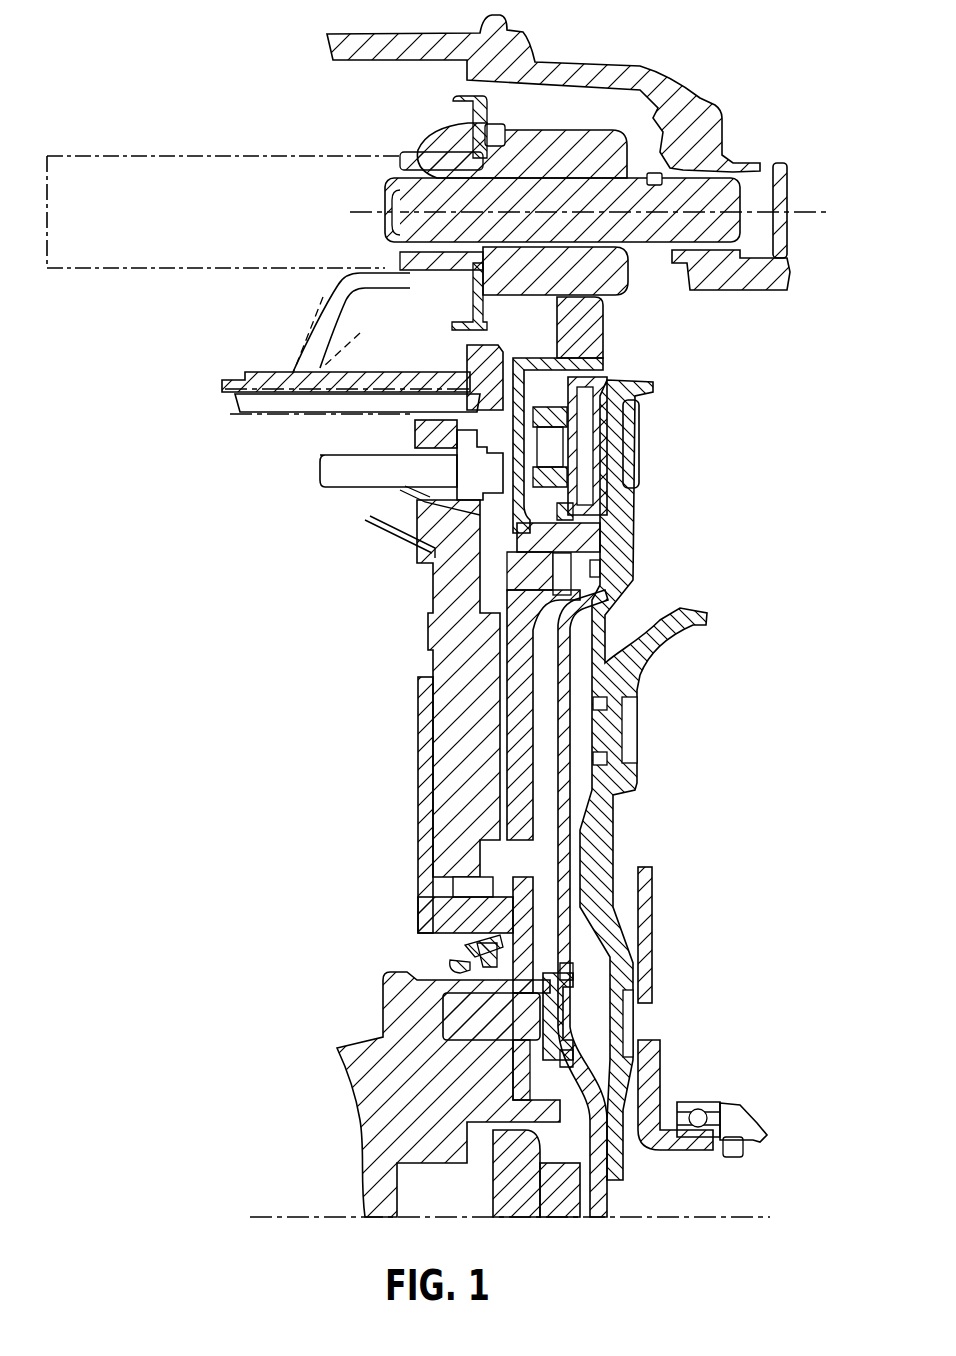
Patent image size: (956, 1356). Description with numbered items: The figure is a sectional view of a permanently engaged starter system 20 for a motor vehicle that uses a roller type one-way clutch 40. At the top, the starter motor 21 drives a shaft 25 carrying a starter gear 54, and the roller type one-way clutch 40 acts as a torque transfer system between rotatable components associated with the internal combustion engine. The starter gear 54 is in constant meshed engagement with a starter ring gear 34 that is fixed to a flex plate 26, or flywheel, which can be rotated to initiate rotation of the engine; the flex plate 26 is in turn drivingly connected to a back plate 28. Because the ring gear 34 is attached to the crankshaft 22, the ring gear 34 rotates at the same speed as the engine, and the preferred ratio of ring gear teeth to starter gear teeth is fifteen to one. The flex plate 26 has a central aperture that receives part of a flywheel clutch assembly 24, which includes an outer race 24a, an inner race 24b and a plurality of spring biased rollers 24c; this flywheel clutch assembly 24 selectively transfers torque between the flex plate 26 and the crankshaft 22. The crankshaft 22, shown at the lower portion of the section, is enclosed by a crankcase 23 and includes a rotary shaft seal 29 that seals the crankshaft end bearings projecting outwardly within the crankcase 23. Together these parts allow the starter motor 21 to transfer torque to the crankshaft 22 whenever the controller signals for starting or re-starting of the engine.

The permanently engaged starter system 20 is at (305, 104).
The starter motor 21 is at (72, 268).
The crankshaft 22 is at (483, 1103).
The crankcase 23 is at (320, 306).
The flywheel clutch assembly 24 is at (627, 476).
The outer race 24a is at (583, 403).
The inner race 24b is at (573, 517).
The spring biased rollers 24c is at (600, 492).
The shaft 25 is at (713, 195).
The flex plate 26 is at (625, 558).
The back plate 28 is at (567, 837).
The rotary shaft seal 29 is at (487, 952).
The starter ring gear 34 is at (606, 321).
The roller type one-way clutch 40 is at (636, 145).
The starter gear 54 is at (563, 147).